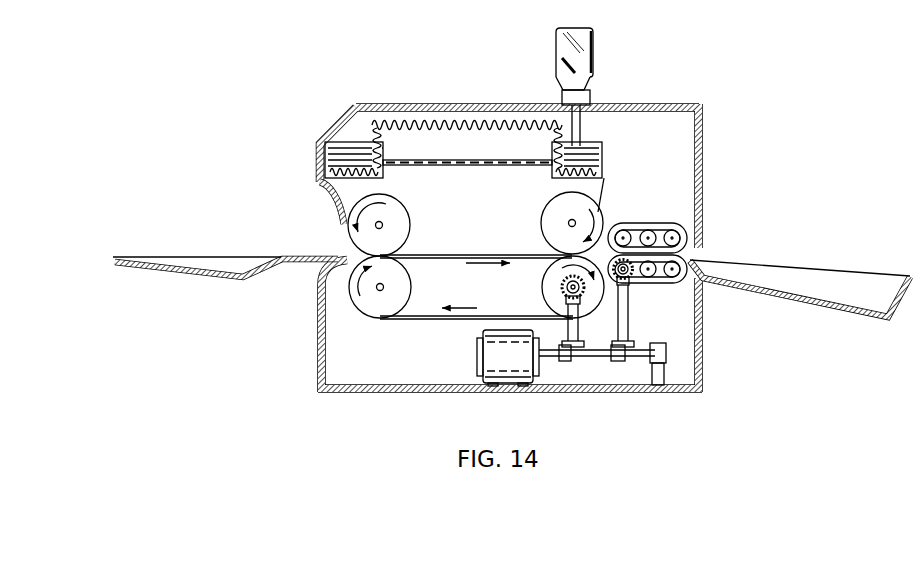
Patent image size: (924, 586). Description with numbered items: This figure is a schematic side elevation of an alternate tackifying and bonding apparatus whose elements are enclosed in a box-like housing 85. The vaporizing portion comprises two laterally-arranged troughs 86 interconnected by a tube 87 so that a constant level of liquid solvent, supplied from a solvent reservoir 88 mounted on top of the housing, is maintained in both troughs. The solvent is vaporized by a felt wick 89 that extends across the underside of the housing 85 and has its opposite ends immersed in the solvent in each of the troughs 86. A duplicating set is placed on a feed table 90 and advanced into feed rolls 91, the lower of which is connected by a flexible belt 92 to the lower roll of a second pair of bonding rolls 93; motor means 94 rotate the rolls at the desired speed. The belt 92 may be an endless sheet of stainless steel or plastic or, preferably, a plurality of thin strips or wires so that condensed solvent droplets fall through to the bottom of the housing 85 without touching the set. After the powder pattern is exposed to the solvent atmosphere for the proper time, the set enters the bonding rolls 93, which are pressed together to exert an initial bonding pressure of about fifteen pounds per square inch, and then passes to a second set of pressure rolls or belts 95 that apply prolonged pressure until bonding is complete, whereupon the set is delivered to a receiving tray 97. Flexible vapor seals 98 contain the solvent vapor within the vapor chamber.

The box-like housing 85 is at (700, 133).
The troughs 86 is at (318, 138).
The tube 87 is at (462, 166).
The solvent reservoir 88 is at (560, 43).
The felt wick 89 is at (445, 123).
The feed table 90 is at (177, 270).
The feed rolls 91 is at (400, 225).
The flexible belt 92 is at (453, 255).
The bonding rolls 93 is at (547, 210).
The motor means 94 is at (482, 341).
The pressure rolls or belts 95 is at (648, 222).
The receiving tray 97 is at (763, 285).
The flexible vapor seals 98 is at (345, 210).